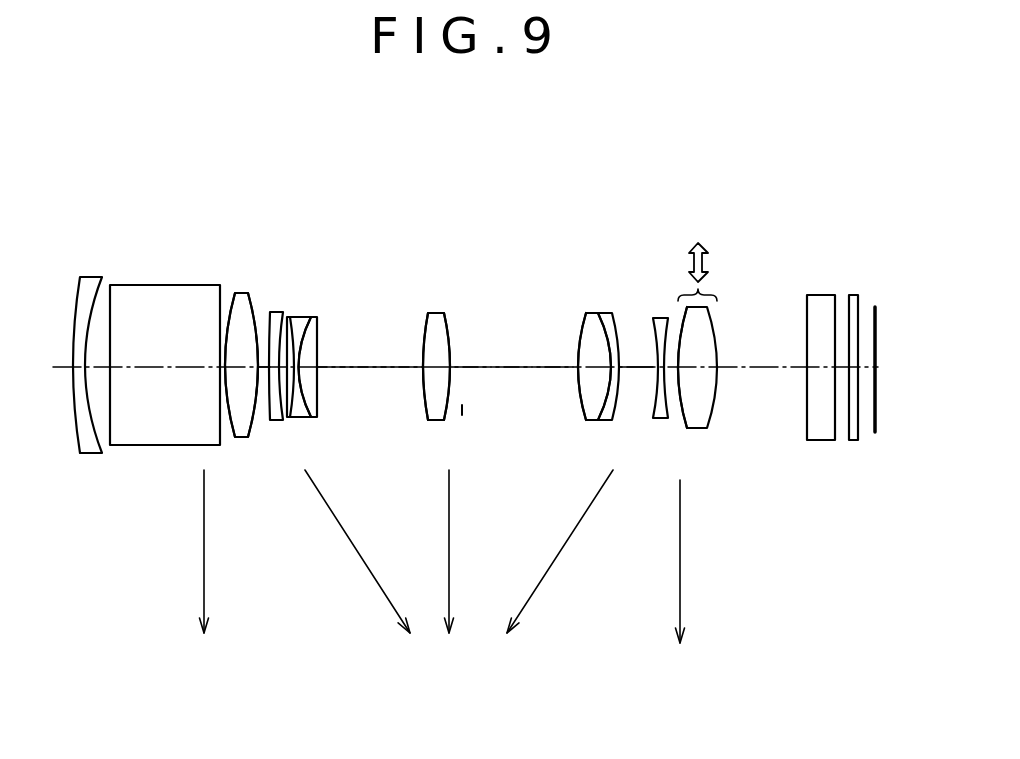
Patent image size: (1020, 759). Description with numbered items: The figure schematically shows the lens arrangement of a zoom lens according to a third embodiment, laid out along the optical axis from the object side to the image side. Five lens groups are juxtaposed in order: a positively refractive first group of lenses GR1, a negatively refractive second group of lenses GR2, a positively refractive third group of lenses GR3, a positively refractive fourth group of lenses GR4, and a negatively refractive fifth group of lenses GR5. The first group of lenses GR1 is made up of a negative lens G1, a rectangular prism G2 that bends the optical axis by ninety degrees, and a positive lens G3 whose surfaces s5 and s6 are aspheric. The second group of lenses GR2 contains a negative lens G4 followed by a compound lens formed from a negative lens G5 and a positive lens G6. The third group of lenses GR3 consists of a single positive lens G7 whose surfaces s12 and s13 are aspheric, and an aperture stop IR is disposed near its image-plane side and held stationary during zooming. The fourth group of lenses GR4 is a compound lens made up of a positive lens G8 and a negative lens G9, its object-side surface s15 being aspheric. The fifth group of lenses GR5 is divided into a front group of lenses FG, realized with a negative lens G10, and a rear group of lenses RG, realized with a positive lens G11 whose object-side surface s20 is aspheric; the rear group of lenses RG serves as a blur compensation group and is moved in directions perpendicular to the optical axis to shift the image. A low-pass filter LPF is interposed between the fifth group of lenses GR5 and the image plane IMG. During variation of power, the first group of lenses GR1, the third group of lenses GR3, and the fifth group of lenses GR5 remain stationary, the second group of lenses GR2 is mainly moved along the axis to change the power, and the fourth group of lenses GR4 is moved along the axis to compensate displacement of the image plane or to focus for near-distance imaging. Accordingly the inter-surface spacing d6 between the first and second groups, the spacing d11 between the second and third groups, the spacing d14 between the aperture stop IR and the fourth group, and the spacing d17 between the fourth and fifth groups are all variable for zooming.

The first group of lenses GR1 is at (57, 202).
The second group of lenses GR2 is at (360, 202).
The third group of lenses GR3 is at (467, 202).
The fourth group of lenses GR4 is at (550, 202).
The fifth group of lenses GR5 is at (648, 202).
The negative lens G1 is at (88, 277).
The rectangular prism G2 is at (150, 285).
The positive lens G3 is at (242, 293).
The negative lens G4 is at (280, 312).
The negative lens G5 is at (297, 317).
The positive lens G6 is at (316, 317).
The positive lens G7 is at (438, 313).
The positive lens G8 is at (588, 313).
The negative lens G9 is at (608, 313).
The negative lens G10 is at (658, 318).
The positive lens G11 is at (712, 307).
The surface s5 is at (233, 296).
The surface s6 is at (255, 437).
The surface s12 is at (423, 340).
The surface s13 is at (450, 352).
The object space-side surface s15 is at (578, 346).
The object space-side surface s20 is at (678, 334).
The inter-surface spacing d6 is at (263, 372).
The inter-surface spacing d11 is at (350, 372).
The inter-surface spacing d14 is at (505, 372).
The inter-surface spacing d17 is at (633, 372).
The aperture stop IR is at (463, 326).
The front group of lenses FG is at (669, 342).
The rear group of lenses RG is at (722, 342).
The low-pass filter LPF is at (852, 295).
The image plane IMG is at (873, 307).